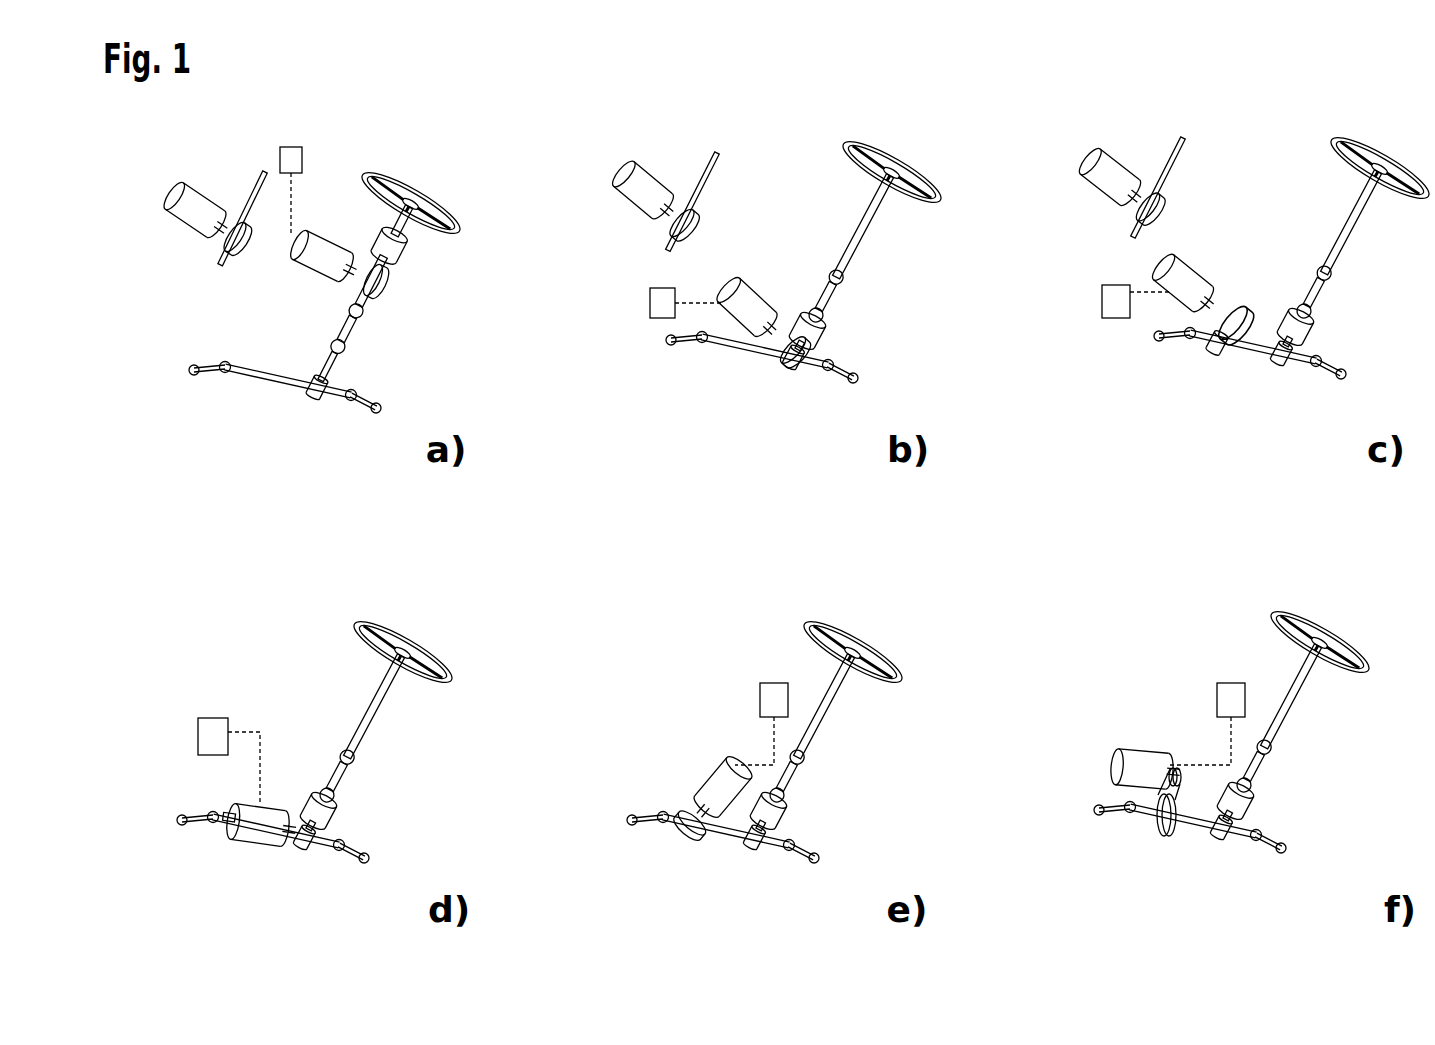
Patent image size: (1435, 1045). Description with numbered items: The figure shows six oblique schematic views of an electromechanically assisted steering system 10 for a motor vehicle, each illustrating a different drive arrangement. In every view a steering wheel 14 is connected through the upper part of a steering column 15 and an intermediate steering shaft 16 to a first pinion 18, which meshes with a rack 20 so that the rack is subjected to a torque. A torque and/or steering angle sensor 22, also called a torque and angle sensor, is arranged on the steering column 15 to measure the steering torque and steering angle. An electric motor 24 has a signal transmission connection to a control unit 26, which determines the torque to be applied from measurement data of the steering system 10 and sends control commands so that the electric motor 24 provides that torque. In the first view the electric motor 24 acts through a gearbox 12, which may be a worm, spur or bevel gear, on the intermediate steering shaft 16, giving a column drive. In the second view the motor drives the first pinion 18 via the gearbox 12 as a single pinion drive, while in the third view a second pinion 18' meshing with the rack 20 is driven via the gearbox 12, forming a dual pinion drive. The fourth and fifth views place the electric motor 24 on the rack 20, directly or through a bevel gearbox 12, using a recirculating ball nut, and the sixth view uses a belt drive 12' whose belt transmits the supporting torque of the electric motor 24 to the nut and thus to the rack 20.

In FIG. 1b, the steering system 10 is at (794, 135).
In FIG. 1b, the gearbox 12 is at (787, 298).
The belt drive 12' is at (1185, 841).
In FIG. 1b, the steering wheel 14 is at (905, 160).
In FIG. 1b, the steering column 15 is at (885, 207).
In FIG. 1b, the intermediate steering shaft 16 is at (720, 167).
In FIG. 1b, the first pinion 18 is at (821, 389).
The second pinion 18' is at (1136, 321).
In FIG. 1b, the rack 20 is at (720, 356).
In FIG. 1b, the torque and/or steering angle sensor 22 is at (820, 335).
In FIG. 1b, the electric motor 24 is at (642, 178).
In FIG. 1b, the control unit 26 is at (649, 303).